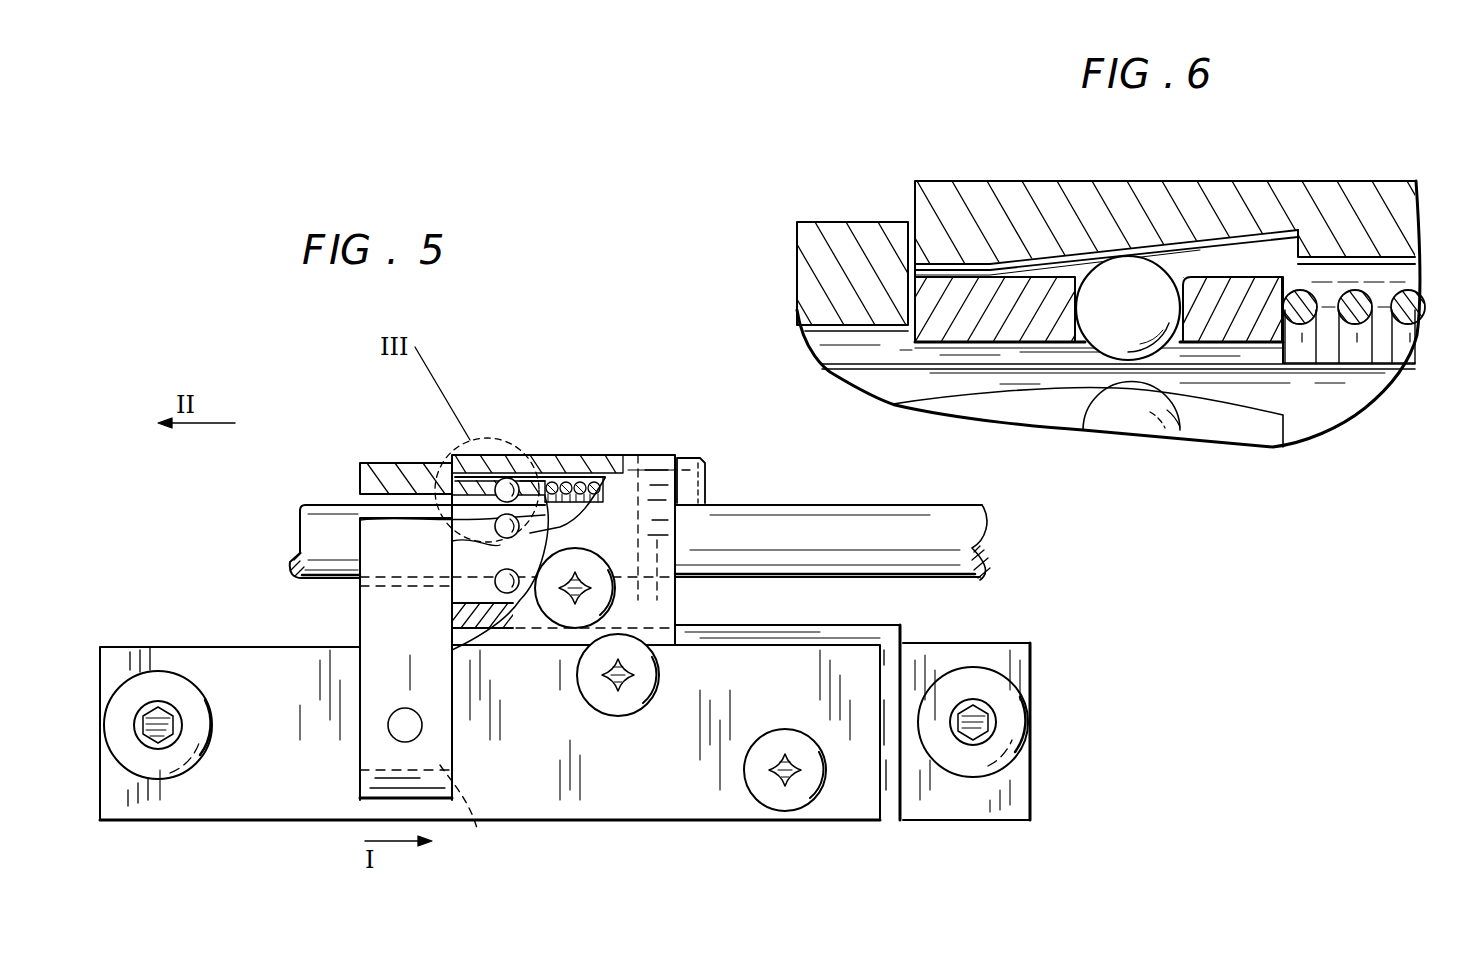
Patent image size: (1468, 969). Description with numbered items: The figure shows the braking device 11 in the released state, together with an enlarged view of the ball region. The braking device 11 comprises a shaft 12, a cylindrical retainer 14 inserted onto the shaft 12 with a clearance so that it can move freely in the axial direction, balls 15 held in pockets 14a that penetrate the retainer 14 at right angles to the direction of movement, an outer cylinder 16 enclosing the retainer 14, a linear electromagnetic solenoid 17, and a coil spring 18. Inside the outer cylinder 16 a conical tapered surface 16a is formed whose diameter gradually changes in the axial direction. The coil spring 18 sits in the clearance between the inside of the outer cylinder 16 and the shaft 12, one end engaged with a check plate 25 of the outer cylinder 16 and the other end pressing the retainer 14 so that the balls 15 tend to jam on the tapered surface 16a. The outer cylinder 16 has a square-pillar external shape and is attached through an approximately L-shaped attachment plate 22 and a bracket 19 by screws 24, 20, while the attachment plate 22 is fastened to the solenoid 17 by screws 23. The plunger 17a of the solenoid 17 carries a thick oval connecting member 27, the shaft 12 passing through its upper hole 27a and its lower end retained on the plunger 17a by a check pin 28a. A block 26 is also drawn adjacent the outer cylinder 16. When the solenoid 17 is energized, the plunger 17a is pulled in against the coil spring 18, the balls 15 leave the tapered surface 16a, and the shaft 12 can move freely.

In FIG. 5, the braking device 11 is at (782, 454).
In FIG. 5, the shaft 12 is at (958, 534).
In FIG. 6, the shaft 12 is at (1215, 382).
In FIG. 5, the retainer 14 is at (440, 482).
In FIG. 6, the retainer 14 is at (988, 292).
In FIG. 5, the pocket 14a is at (497, 523).
In FIG. 6, the pocket 14a is at (1082, 295).
In FIG. 5, the ball 15 is at (516, 566).
In FIG. 6, the ball 15 is at (1153, 413).
In FIG. 5, the outer cylinder 16 is at (615, 472).
In FIG. 6, the outer cylinder 16 is at (1388, 208).
In FIG. 5, the tapered surface 16a is at (488, 478).
In FIG. 6, the tapered surface 16a is at (1258, 258).
In FIG. 5, the linear electromagnetic solenoid 17 is at (900, 626).
In FIG. 5, the plunger 17a is at (479, 808).
In FIG. 5, the coil spring 18 is at (582, 484).
In FIG. 6, the coil spring 18 is at (1357, 294).
In FIG. 5, the bracket 19 is at (950, 800).
In FIG. 5, the screw 20 is at (160, 776).
In FIG. 5, the attachment plate 22 is at (592, 800).
In FIG. 5, the screw 23 is at (768, 752).
In FIG. 5, the screw 24 is at (612, 594).
In FIG. 5, the check plate 25 is at (668, 462).
In FIG. 5, the stopper block 26 is at (697, 490).
In FIG. 5, the connecting member 27 is at (380, 485).
In FIG. 6, the connecting member 27 is at (848, 235).
In FIG. 5, the upper hole 27a is at (362, 512).
In FIG. 5, the check pin 28a is at (398, 723).